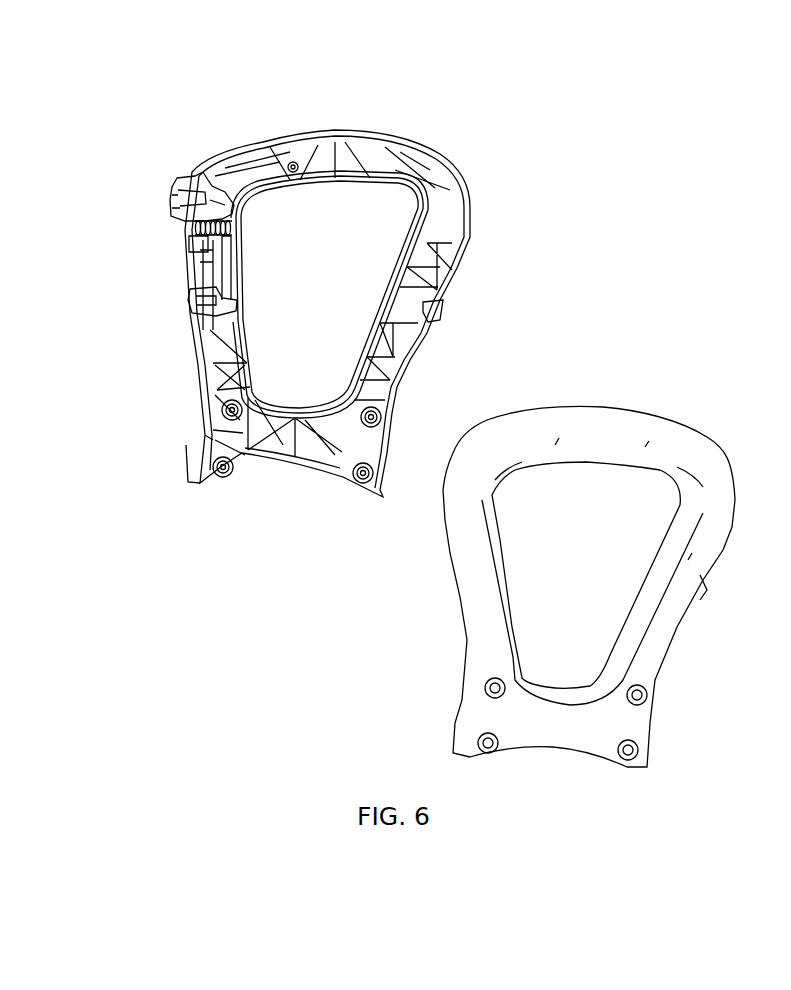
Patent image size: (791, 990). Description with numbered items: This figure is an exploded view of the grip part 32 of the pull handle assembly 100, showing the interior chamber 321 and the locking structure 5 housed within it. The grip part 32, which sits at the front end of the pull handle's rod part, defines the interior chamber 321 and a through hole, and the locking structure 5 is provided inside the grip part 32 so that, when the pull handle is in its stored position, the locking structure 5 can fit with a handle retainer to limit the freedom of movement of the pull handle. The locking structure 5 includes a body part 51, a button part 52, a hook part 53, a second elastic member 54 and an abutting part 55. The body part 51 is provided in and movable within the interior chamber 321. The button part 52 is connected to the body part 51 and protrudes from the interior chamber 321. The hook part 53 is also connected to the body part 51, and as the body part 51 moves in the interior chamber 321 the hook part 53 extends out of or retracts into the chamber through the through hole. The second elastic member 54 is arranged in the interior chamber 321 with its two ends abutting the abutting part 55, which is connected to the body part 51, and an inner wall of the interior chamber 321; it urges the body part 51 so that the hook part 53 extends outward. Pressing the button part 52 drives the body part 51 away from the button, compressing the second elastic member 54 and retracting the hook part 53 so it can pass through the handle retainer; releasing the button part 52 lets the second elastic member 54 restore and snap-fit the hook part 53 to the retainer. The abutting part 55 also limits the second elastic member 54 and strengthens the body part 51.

The pull handle assembly 100 is at (465, 54).
The grip part 32 is at (310, 477).
The interior chamber 321 is at (270, 170).
The locking structure 5 is at (90, 183).
The body part 51 is at (218, 272).
The button part 52 is at (218, 214).
The hook part 53 is at (195, 315).
The second elastic member 54 is at (193, 238).
The abutting part 55 is at (193, 229).